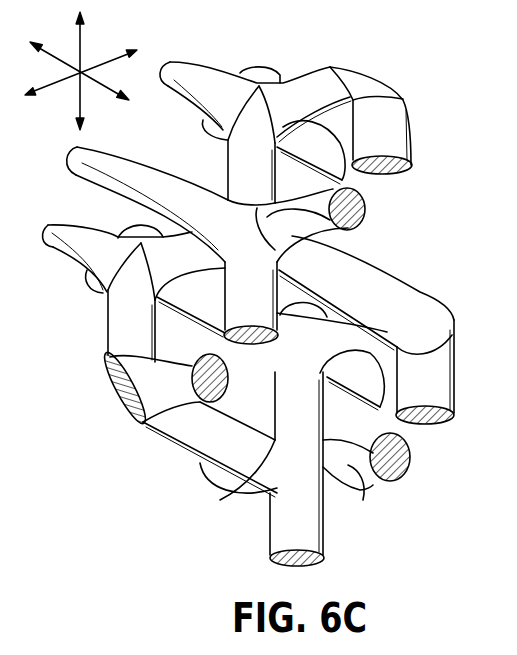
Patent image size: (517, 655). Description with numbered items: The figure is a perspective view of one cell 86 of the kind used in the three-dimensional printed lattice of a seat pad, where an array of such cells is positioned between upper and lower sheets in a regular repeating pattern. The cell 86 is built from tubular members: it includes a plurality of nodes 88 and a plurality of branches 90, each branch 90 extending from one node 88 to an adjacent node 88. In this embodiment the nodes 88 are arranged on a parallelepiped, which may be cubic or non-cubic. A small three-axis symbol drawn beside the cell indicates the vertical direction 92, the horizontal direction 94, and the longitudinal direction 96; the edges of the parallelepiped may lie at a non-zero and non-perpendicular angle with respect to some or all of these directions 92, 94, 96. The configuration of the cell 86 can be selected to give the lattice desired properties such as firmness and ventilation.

The cell 86 is at (66, 406).
The node 88 is at (277, 73).
The branch 90 is at (392, 297).
The vertical direction 92 is at (83, 27).
The horizontal direction 94 is at (50, 54).
The longitudinal direction 96 is at (113, 63).